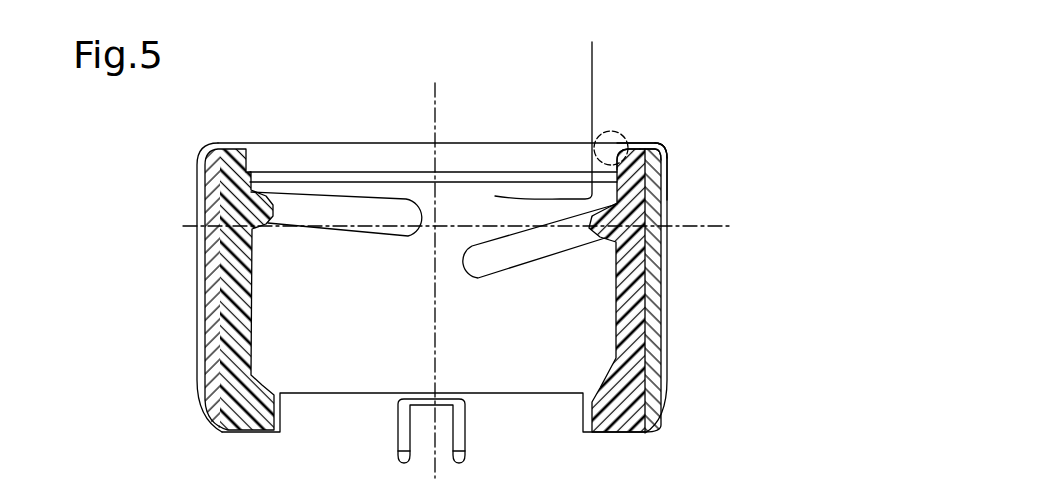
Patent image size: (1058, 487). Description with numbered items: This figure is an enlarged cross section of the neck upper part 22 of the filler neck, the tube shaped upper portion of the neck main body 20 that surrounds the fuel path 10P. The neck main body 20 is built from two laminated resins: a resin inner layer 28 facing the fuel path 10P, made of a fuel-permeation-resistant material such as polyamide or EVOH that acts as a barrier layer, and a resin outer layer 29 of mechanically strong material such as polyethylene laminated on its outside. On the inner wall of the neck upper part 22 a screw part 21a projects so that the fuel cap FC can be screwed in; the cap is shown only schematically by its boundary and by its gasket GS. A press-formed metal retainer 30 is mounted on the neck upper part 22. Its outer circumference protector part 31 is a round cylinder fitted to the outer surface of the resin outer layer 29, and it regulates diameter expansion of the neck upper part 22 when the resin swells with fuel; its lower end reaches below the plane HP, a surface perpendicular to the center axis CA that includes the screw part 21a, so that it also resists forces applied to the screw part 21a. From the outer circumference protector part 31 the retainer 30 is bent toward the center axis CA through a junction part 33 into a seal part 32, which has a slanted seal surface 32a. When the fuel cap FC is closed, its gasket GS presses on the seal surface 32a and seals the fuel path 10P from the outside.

The fuel path 10P is at (420, 331).
The neck main body 20 is at (695, 288).
The neck upper part 22 is at (198, 263).
The screw part 21a is at (593, 238).
The resin inner layer 28 is at (633, 298).
The resin outer layer 29 is at (665, 340).
The retainer 30 is at (715, 129).
The outer circumference protector part 31 is at (711, 166).
The seal part 32 is at (632, 150).
The seal surface 32a is at (632, 151).
The junction part 33 is at (653, 147).
The fuel cap FC is at (598, 52).
The center axis CA is at (437, 97).
The gasket GS is at (433, 141).
The plane HP is at (688, 225).